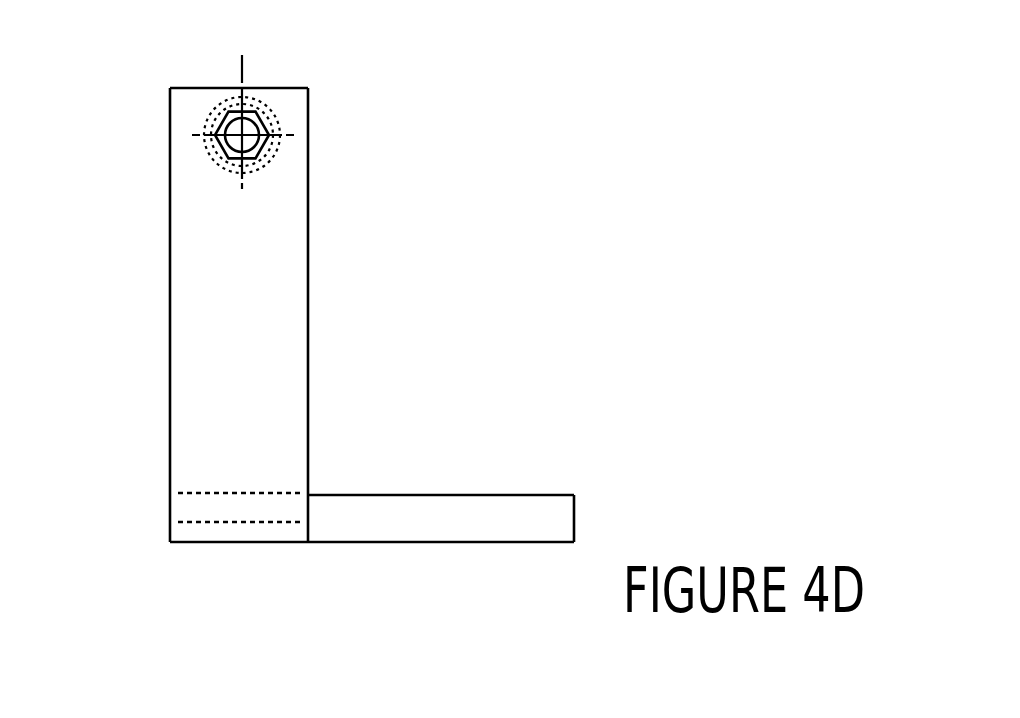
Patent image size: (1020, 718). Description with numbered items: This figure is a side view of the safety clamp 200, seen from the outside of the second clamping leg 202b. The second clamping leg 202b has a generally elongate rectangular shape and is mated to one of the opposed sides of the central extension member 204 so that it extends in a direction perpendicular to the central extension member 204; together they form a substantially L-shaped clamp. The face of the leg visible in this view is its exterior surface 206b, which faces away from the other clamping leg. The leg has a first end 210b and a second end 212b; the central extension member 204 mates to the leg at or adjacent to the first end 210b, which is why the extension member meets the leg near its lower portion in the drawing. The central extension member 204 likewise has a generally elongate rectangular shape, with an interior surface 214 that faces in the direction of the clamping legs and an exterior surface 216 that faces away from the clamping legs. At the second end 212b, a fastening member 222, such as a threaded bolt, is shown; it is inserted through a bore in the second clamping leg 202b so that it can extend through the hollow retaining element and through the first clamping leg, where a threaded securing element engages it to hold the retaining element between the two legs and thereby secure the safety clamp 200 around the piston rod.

The safety clamp 200 is at (578, 116).
The second clamping leg 202b is at (136, 218).
The central extension member 204 is at (594, 517).
The exterior surface 206b is at (202, 362).
The first end 210b is at (222, 526).
The second end 212b is at (200, 88).
The interior surface 214 is at (460, 495).
The exterior surface 216 is at (438, 545).
The fastening member 222 is at (252, 124).